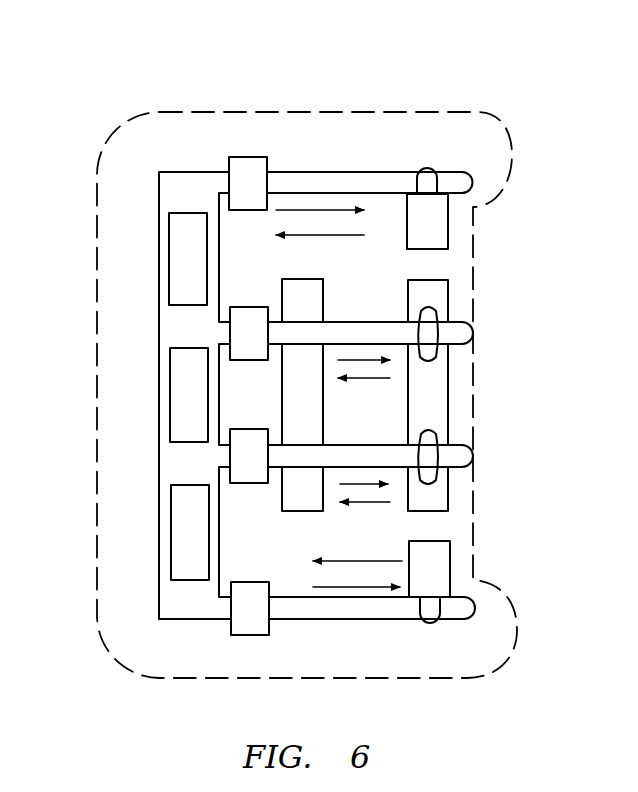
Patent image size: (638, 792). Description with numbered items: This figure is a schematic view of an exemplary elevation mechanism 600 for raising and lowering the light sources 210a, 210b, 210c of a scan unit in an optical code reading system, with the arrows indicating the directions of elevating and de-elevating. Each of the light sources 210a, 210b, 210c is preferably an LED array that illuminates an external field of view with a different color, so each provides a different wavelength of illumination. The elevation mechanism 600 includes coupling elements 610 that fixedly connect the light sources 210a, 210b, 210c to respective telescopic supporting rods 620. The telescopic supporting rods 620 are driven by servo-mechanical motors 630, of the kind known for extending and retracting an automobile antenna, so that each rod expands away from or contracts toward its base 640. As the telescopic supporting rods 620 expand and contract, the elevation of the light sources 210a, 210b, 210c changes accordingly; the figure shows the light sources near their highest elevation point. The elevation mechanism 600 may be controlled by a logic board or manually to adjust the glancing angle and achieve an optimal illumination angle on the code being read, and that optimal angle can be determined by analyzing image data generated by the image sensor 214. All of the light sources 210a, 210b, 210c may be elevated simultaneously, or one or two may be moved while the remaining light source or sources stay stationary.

The elevation mechanism 600 is at (405, 127).
The coupling elements 610 is at (428, 168).
The telescopic supporting rods 620 is at (328, 172).
The servo-mechanical motors 630 is at (190, 234).
The base 640 is at (250, 157).
The image sensor 214 is at (303, 500).
The light source 210a is at (448, 233).
The light source 210b is at (430, 397).
The light source 210c is at (432, 568).